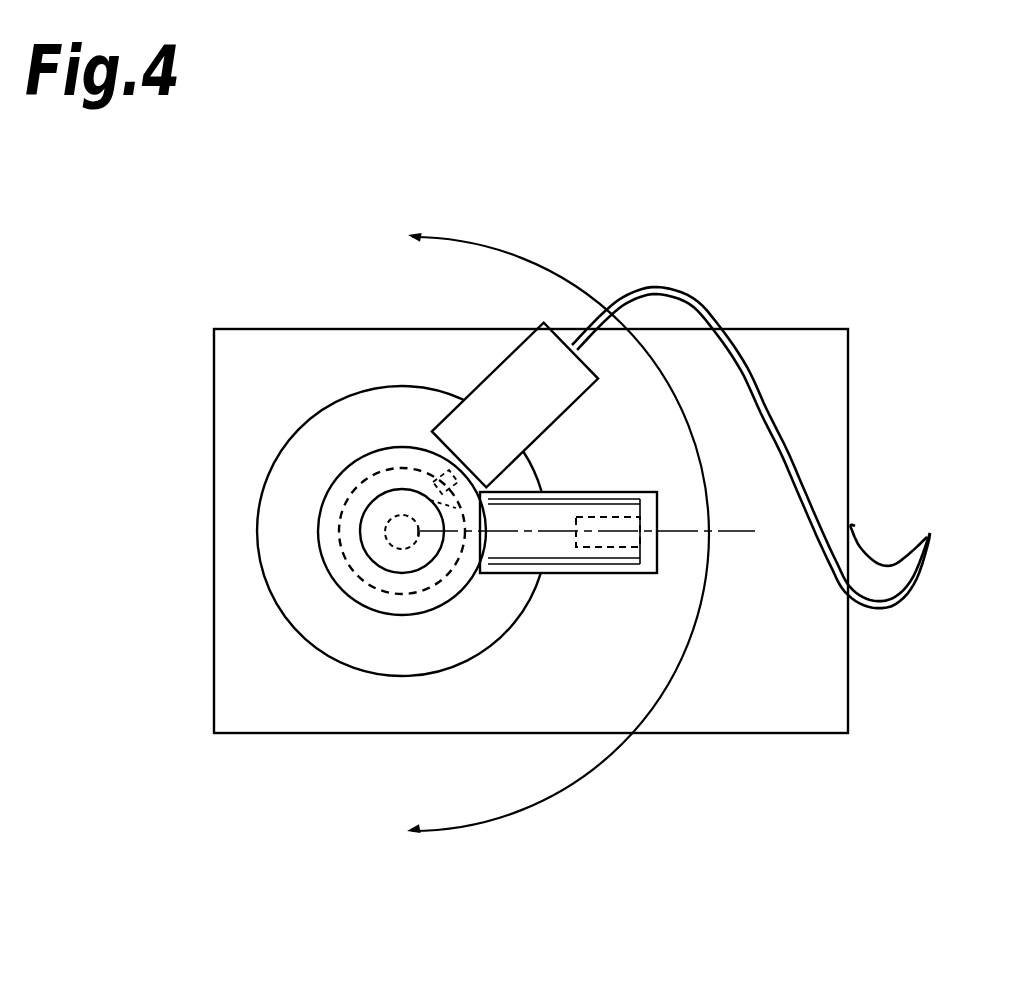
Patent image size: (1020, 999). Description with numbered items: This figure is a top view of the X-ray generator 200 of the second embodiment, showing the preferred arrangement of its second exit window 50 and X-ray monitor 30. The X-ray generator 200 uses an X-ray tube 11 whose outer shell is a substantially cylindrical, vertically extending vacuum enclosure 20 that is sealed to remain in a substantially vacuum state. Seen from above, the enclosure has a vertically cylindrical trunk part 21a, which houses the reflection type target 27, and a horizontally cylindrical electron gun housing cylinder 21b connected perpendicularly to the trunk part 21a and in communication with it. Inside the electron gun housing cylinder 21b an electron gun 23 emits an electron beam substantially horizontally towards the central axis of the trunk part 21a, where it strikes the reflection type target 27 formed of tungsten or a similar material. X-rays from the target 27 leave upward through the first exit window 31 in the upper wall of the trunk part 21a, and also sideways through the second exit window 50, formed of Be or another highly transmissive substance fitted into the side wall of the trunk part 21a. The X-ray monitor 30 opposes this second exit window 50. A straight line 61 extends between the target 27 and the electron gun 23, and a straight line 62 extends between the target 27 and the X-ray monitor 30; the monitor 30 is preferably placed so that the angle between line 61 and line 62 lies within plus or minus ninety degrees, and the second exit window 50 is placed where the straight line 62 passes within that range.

The X-ray generator 200 is at (526, 580).
The X-ray tube 11 is at (287, 367).
The vacuum enclosure 20 is at (257, 557).
The trunk part 21a is at (377, 613).
The electron gun housing cylinder 21b is at (562, 574).
The electron gun 23 is at (635, 574).
The reflection type target 27 is at (445, 585).
The X-ray monitor 30 is at (583, 390).
The first exit window 31 is at (385, 546).
The second exit window 50 is at (440, 487).
The straight line 61 is at (530, 530).
The straight line 62 is at (417, 520).